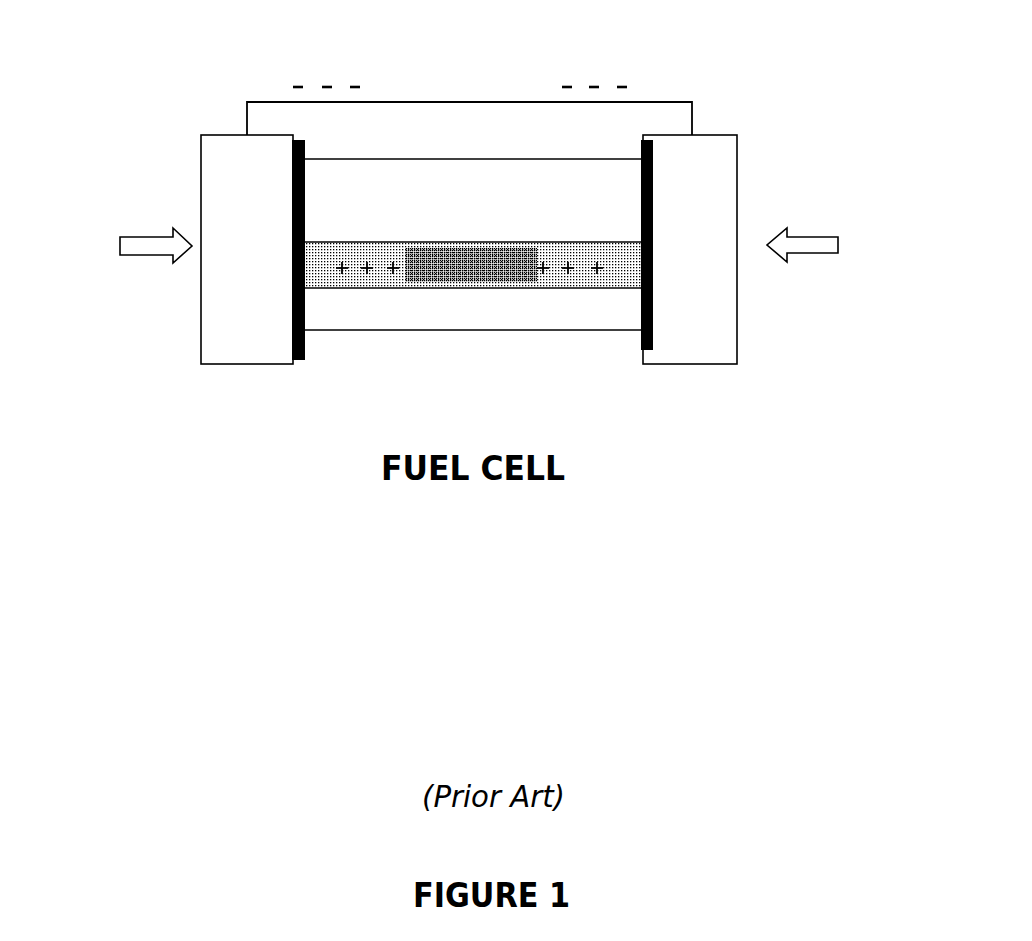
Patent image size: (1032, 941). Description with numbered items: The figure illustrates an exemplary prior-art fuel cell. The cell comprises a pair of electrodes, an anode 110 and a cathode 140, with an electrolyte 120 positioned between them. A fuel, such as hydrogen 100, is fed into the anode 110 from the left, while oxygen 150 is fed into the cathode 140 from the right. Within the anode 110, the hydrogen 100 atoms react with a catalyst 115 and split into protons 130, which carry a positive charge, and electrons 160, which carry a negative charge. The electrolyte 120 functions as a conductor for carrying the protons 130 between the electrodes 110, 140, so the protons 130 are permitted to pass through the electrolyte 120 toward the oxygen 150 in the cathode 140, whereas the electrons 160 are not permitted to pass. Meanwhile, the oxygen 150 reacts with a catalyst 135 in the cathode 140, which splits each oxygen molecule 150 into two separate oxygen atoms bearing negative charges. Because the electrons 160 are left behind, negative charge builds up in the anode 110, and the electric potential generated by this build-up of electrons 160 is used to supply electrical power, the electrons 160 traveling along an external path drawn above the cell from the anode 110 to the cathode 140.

The hydrogen 100 is at (72, 210).
The anode 110 is at (212, 322).
The catalyst 115 is at (293, 350).
The electrolyte 120 is at (349, 322).
The protons 130 is at (542, 275).
The catalyst 135 is at (652, 333).
The cathode 140 is at (707, 322).
The oxygen 150 is at (873, 225).
The electrons 160 is at (470, 72).